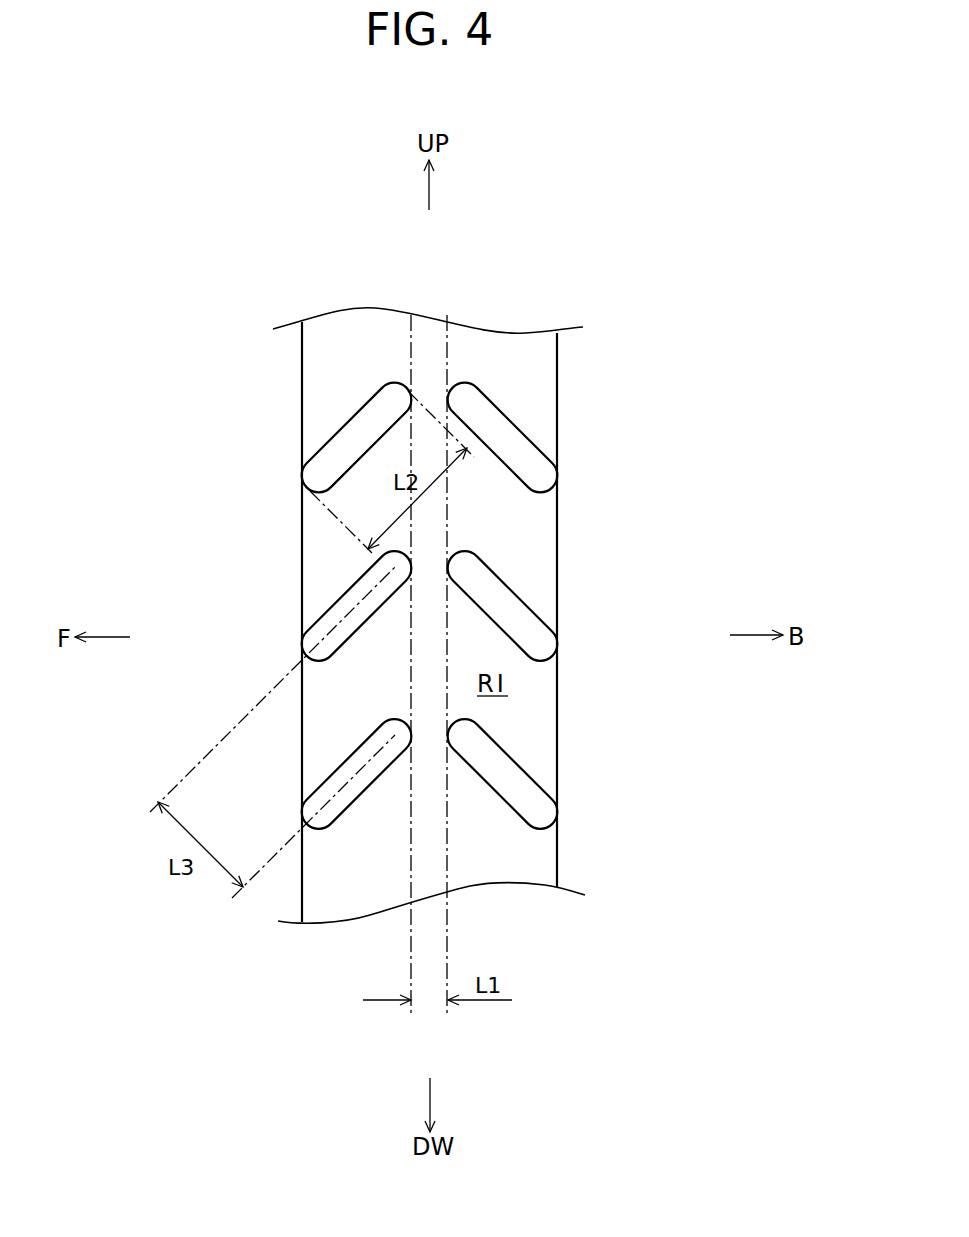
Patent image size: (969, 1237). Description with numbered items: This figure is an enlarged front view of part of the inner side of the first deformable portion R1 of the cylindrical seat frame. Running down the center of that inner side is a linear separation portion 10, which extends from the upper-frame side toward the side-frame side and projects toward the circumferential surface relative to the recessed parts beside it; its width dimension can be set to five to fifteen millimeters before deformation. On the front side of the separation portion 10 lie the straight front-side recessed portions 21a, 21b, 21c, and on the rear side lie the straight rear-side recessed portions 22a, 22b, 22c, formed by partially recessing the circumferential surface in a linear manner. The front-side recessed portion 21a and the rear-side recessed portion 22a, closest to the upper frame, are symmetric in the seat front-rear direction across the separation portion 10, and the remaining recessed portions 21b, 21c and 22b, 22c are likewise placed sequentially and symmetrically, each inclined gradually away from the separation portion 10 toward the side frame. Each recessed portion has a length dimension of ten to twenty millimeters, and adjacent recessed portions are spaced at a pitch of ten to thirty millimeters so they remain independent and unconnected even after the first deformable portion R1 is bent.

The separation portion 10 is at (425, 335).
The front-side recessed portion 21a is at (330, 453).
The front-side recessed portion 21b is at (330, 620).
The front-side recessed portion 21c is at (330, 790).
The rear-side recessed portion 22a is at (545, 472).
The rear-side recessed portion 22b is at (537, 640).
The rear-side recessed portion 22c is at (537, 810).
The first deformable portion R1 is at (570, 252).